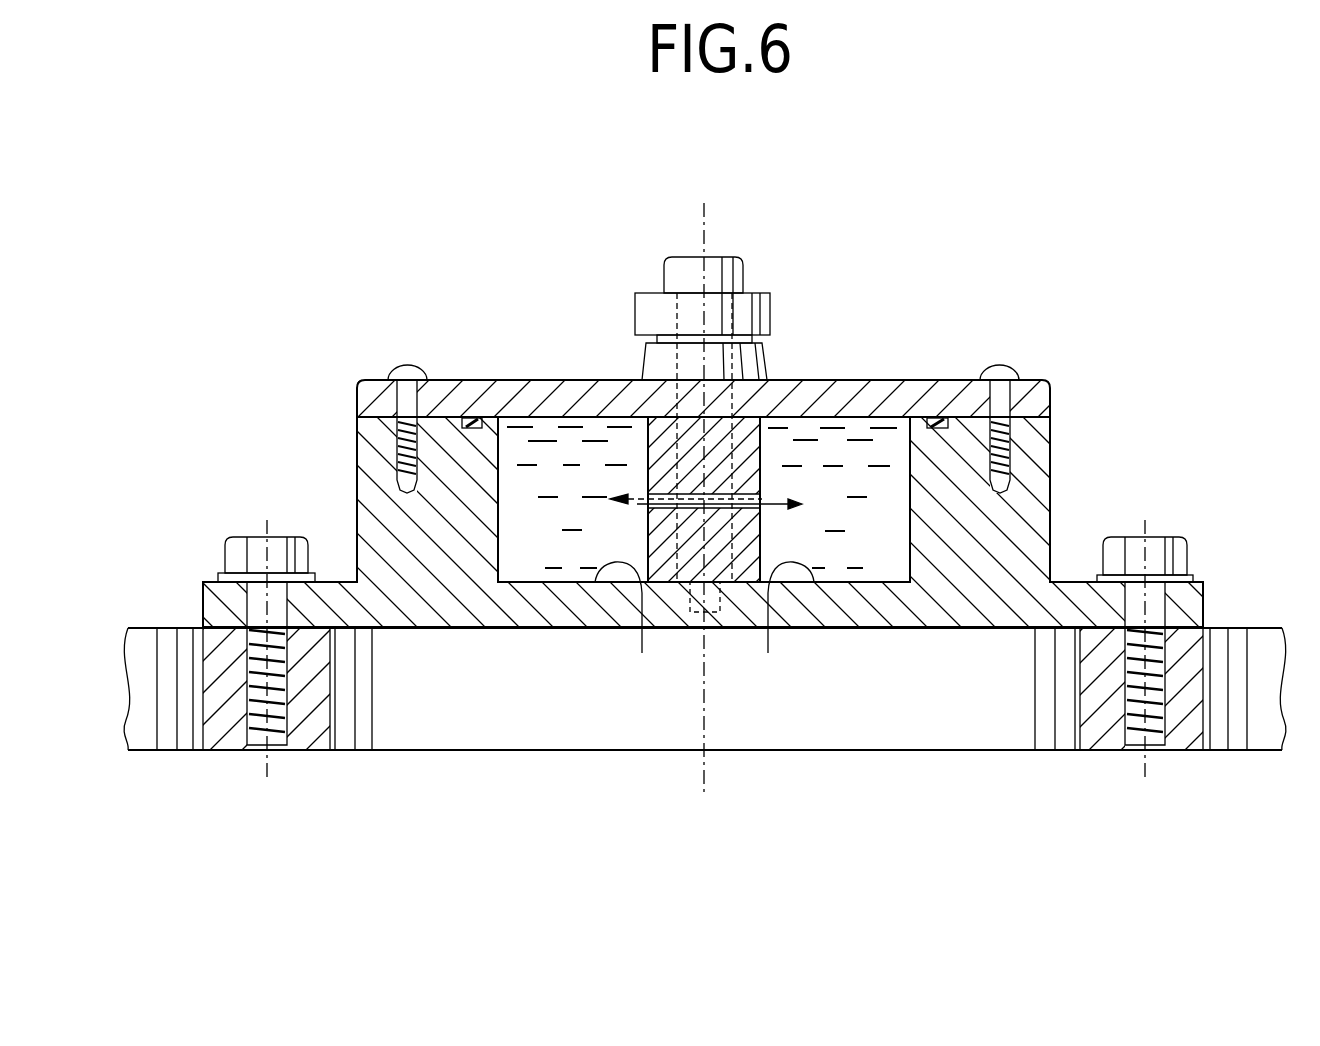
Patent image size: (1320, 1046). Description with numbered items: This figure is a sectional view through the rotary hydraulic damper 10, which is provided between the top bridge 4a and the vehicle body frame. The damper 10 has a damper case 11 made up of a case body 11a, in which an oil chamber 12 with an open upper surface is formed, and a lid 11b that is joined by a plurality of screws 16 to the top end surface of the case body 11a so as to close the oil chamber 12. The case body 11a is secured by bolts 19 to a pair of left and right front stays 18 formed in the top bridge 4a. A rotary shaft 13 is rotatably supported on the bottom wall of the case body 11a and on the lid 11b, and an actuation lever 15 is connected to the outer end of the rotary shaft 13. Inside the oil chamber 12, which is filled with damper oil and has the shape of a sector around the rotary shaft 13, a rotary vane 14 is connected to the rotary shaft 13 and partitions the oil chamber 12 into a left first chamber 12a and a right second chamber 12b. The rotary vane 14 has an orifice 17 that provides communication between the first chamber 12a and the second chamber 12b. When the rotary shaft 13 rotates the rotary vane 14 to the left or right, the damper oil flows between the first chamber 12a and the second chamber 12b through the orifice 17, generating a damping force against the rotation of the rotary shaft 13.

The top bridge 4a is at (935, 730).
The rotary hydraulic damper 10 is at (660, 436).
The damper case 11 is at (660, 503).
The case body 11a is at (1042, 490).
The lid 11b is at (1042, 400).
The oil chamber 12 is at (702, 583).
The first chamber 12a is at (631, 629).
The second chamber 12b is at (774, 629).
The rotary shaft 13 is at (729, 266).
The rotary vane 14 is at (762, 452).
The actuation lever 15 is at (643, 317).
The screws 16 is at (397, 364).
The orifice 17 is at (762, 503).
The front stays 18 is at (223, 740).
The bolts 19 is at (257, 545).